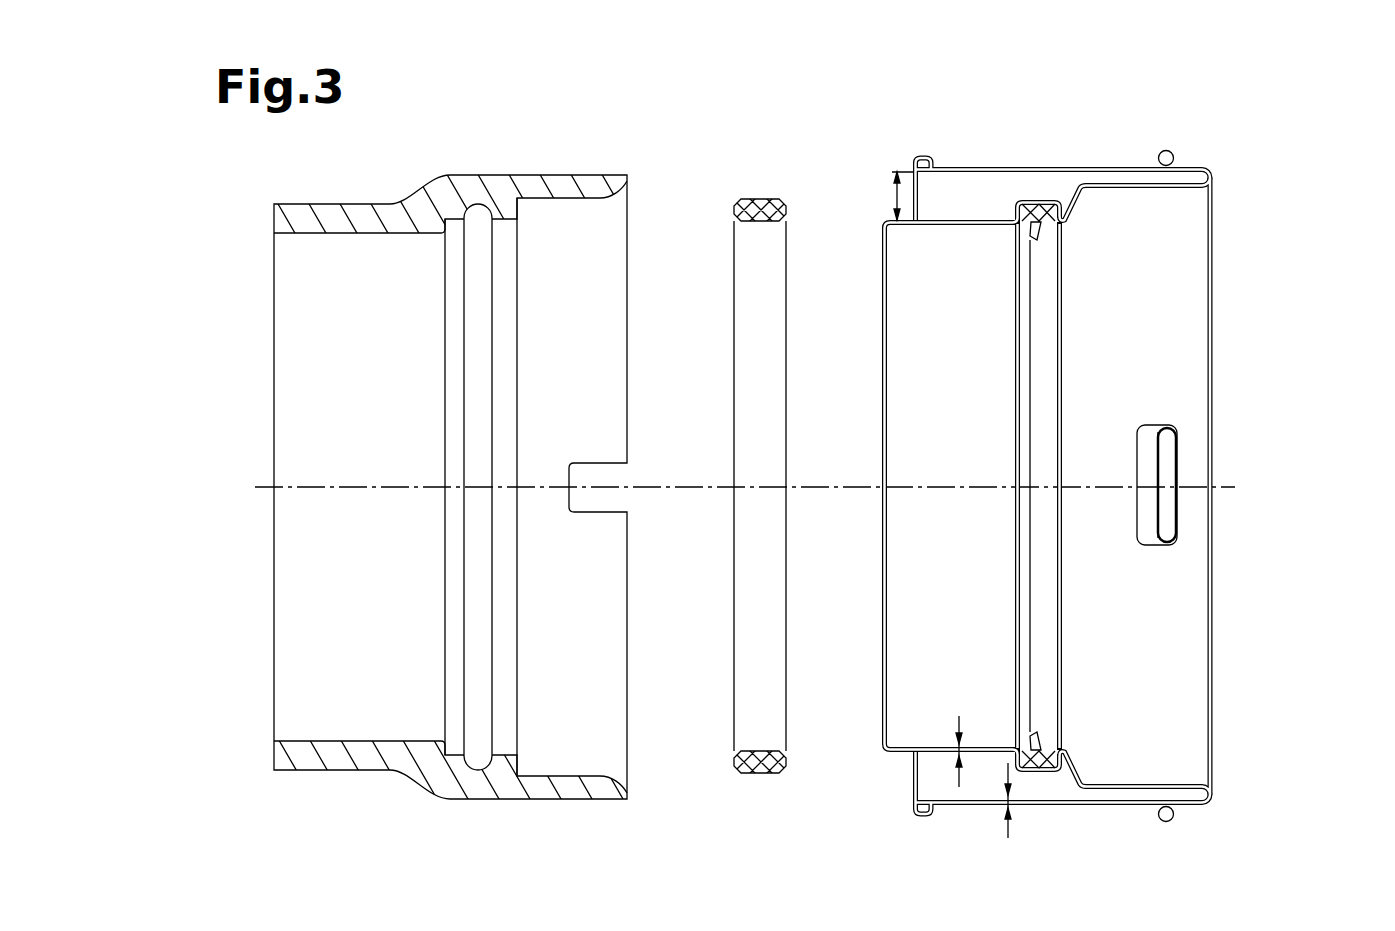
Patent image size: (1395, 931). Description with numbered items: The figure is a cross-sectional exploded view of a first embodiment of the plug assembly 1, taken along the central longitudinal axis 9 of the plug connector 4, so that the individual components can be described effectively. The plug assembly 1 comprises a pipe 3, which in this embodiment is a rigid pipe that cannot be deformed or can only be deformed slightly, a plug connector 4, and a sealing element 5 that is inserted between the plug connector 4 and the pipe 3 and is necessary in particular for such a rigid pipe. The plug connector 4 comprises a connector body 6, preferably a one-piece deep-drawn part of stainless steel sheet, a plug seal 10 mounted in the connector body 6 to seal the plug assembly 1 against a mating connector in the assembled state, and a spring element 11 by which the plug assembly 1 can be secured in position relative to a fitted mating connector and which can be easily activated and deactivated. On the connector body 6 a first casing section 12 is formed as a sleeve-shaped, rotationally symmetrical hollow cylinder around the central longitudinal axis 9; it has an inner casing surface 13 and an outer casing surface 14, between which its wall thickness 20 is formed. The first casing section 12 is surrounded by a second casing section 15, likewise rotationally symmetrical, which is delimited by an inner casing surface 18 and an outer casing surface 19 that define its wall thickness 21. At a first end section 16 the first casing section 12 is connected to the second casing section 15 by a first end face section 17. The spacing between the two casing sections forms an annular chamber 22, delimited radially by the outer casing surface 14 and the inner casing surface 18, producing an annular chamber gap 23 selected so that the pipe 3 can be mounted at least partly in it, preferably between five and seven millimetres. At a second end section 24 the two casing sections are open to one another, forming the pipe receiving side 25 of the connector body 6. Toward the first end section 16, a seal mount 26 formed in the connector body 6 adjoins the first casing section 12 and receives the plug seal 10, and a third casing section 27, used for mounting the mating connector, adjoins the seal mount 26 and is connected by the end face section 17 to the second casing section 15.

The plug assembly 1 is at (1303, 151).
The pipe 3 is at (447, 198).
The plug connector 4 is at (1249, 207).
The sealing element 5 is at (758, 198).
The connector body 6 is at (1186, 331).
The central longitudinal axis 9 is at (1226, 486).
The plug seal 10 is at (1045, 208).
The spring element 11 is at (1171, 151).
The first casing section 12 is at (937, 227).
The inner casing surface 13 is at (1003, 205).
The outer casing surface 14 is at (982, 230).
The second casing section 15 is at (953, 219).
The first end section 16 is at (1236, 167).
The first end face section 17 is at (1211, 177).
The inner casing surface 18 is at (1064, 183).
The outer casing surface 19 is at (1109, 166).
The wall thickness 20 is at (966, 711).
The wall thickness 21 is at (1016, 830).
The annular chamber 22 is at (938, 192).
The annular chamber gap 23 is at (897, 200).
The second end section 24 is at (872, 149).
The pipe receiving side 25 is at (879, 216).
The seal mount 26 is at (1059, 192).
The third casing section 27 is at (1150, 187).